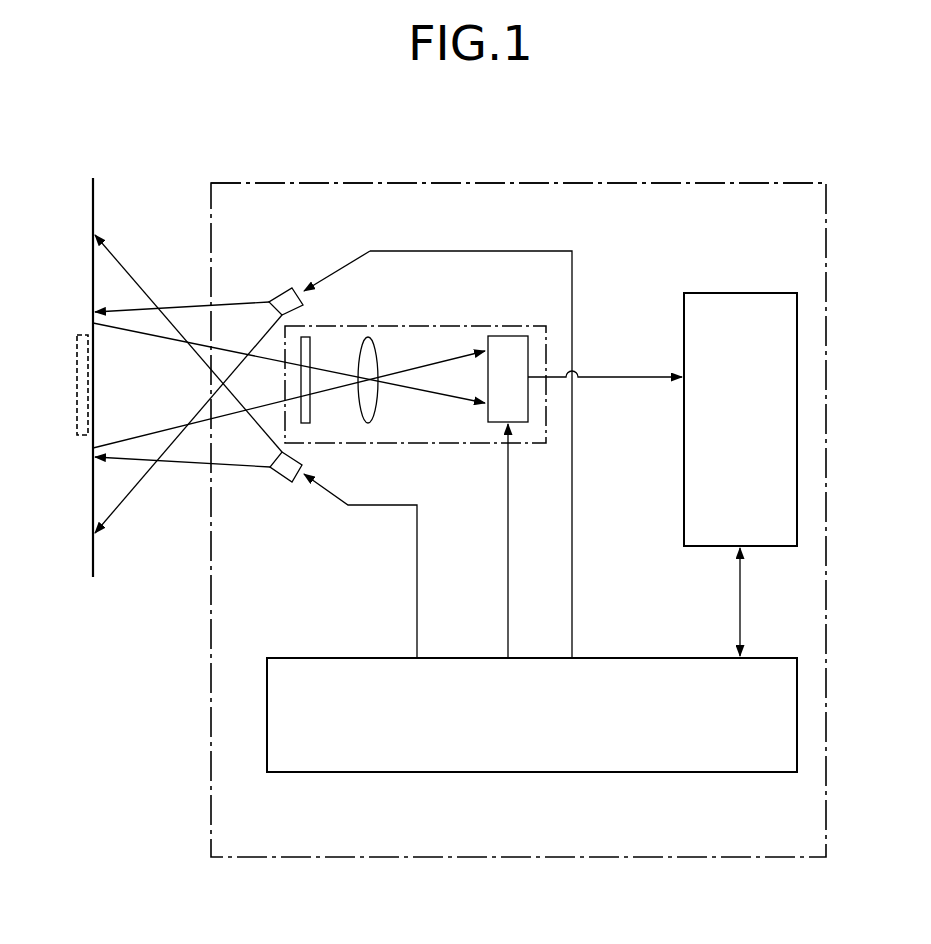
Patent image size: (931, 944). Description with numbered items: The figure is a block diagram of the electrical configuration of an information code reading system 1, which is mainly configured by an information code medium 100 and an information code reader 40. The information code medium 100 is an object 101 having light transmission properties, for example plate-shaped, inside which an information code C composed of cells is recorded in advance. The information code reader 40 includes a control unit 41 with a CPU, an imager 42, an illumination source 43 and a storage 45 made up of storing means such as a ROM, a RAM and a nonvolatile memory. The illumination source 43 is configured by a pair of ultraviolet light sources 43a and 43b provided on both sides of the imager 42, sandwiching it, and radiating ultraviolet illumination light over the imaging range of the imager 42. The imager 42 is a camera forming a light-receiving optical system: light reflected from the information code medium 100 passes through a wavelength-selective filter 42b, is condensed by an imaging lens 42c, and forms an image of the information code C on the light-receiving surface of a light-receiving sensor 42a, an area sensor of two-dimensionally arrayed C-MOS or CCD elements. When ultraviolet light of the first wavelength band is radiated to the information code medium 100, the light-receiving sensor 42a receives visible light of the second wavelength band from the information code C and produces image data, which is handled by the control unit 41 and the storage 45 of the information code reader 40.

The information code reading system 1 is at (680, 167).
The information code reader 40 is at (448, 182).
The control unit 41 is at (673, 772).
The imager 42 is at (329, 367).
The light-receiving sensor 42a is at (511, 336).
The wavelength-selective filter 42b is at (313, 358).
The imaging lens 42c is at (378, 407).
The illumination source 43 is at (278, 446).
The ultraviolet light source 43a is at (298, 458).
The ultraviolet light source 43b is at (299, 309).
The storage 45 is at (728, 292).
The information code medium 100 is at (146, 371).
The object 101 is at (94, 213).
The information code C is at (77, 378).